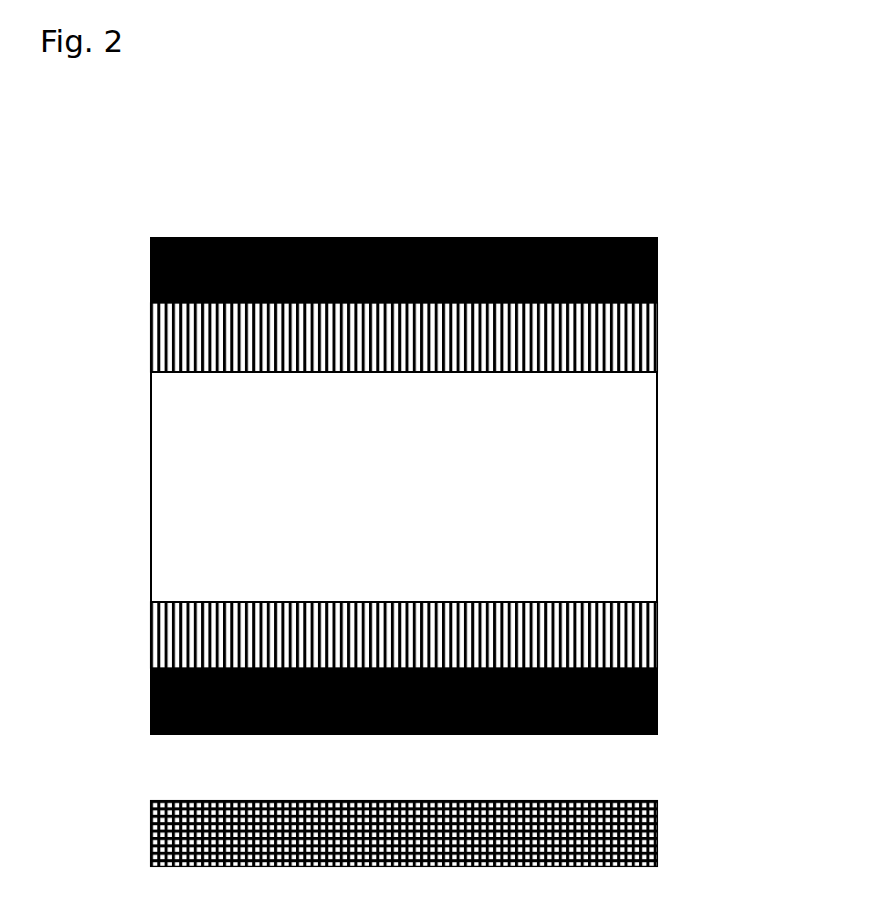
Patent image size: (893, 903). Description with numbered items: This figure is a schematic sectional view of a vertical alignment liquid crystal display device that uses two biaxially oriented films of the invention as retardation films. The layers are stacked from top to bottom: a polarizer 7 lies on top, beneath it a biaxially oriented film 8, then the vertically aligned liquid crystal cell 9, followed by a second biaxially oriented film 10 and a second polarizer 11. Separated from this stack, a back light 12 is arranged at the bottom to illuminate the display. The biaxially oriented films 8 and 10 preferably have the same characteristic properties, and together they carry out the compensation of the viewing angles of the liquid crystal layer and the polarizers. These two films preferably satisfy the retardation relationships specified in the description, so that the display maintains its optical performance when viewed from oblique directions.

The polarizer 7 is at (658, 238).
The biaxially oriented film 8 is at (630, 345).
The vertically aligned liquid crystal cell 9 is at (532, 525).
The biaxially oriented film 10 is at (628, 627).
The polarizer 11 is at (658, 715).
The back light 12 is at (637, 823).